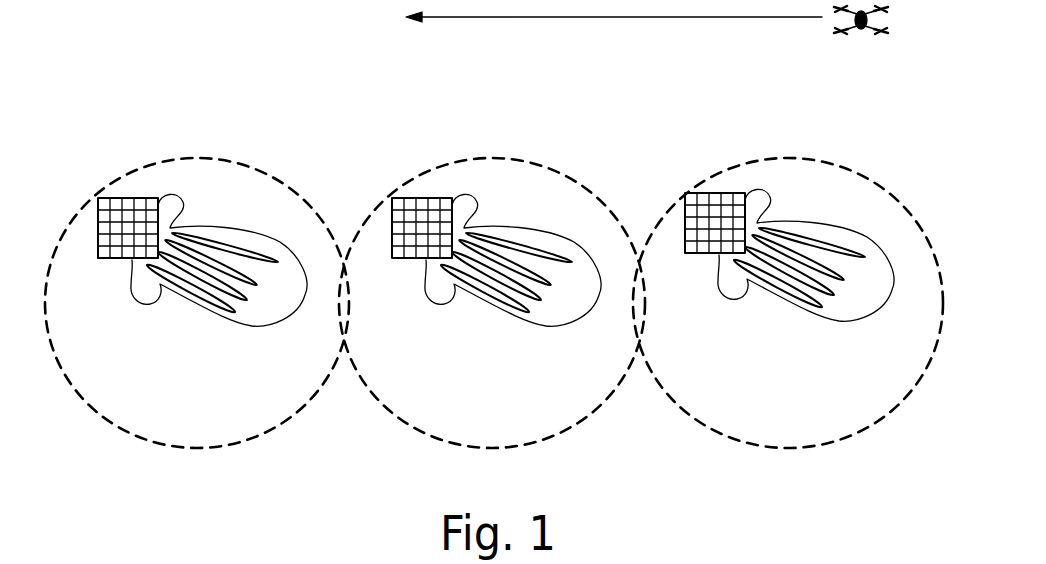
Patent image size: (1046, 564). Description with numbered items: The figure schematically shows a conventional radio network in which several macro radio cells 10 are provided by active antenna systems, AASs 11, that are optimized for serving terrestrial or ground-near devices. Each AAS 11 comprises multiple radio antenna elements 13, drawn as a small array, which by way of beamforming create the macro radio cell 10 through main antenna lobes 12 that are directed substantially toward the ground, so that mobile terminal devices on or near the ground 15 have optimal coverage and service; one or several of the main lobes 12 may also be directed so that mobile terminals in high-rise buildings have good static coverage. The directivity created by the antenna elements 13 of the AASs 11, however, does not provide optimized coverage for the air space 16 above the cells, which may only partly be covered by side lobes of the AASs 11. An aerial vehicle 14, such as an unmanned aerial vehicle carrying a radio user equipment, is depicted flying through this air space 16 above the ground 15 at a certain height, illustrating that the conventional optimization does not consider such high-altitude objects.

The macro radio cell 10 is at (130, 433).
The AAS 11 is at (476, 231).
The main antenna lobe 12 is at (197, 290).
The radio antenna element 13 is at (108, 208).
The drone / unmanned aerial vehicle 14 is at (861, 42).
The ground 15 is at (359, 433).
The air space 16 is at (330, 30).